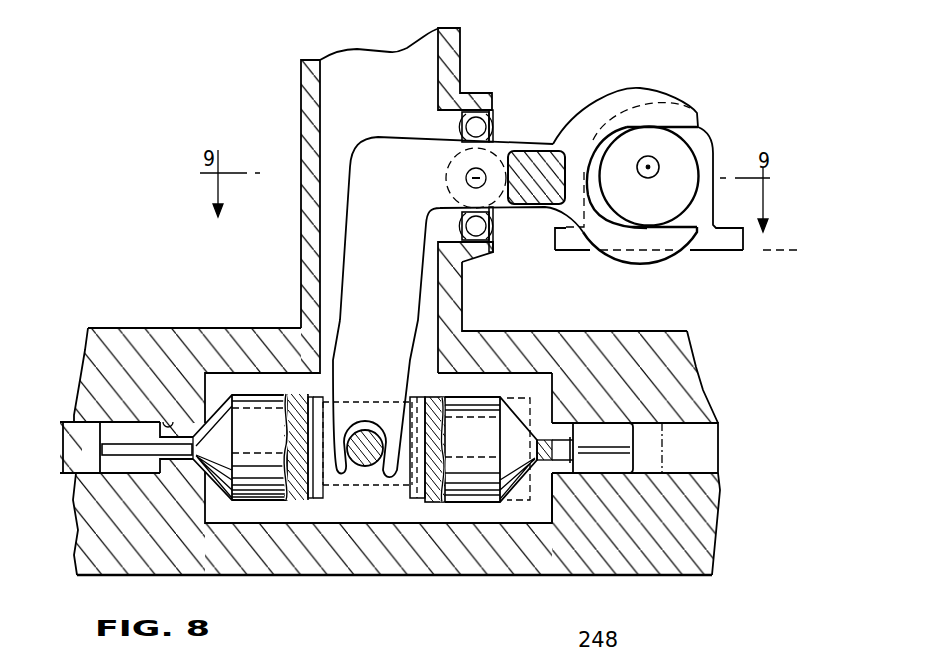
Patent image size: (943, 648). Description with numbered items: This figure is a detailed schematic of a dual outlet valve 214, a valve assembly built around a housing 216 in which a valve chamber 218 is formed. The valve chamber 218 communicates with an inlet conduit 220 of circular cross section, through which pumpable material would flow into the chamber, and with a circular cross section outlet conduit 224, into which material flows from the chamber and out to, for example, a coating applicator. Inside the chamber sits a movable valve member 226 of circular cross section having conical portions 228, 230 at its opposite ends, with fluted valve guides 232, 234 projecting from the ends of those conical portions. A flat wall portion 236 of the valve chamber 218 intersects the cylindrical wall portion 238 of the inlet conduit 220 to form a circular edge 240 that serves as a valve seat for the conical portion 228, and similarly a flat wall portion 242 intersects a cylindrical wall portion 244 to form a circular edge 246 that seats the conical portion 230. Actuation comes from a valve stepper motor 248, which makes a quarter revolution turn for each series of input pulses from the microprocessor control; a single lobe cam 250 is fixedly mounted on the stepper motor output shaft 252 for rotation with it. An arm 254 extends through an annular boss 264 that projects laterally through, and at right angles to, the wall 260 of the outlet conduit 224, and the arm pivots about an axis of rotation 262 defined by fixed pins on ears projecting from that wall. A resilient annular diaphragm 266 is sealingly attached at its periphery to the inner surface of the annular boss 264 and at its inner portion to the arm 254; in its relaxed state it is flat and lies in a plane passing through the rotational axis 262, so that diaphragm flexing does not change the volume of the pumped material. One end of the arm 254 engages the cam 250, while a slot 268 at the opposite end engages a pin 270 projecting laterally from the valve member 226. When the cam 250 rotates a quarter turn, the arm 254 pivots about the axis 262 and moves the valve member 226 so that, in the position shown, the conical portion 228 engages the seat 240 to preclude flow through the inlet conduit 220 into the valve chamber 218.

The dual outlet valve 214 is at (264, 287).
The housing 216 is at (263, 327).
The valve chamber 218 is at (302, 525).
The inlet conduit 220 is at (76, 398).
The outlet conduit 224 is at (437, 319).
The movable valve member 226 is at (262, 488).
The conical portion 228 is at (203, 473).
The conical portion 230 is at (563, 425).
The fluted valve guide 232 is at (112, 464).
The fluted valve guide 234 is at (620, 430).
The wall portion 236 is at (205, 392).
The cylindrical wall portion 238 is at (160, 420).
The circular edge 240 is at (207, 427).
The wall portion 242 is at (533, 380).
The cylindrical wall portion 244 is at (557, 430).
The circular edge 246 is at (552, 465).
The valve stepper motor 248 is at (700, 84).
The single lobe cam 250 is at (684, 170).
The stepper motor output shaft 252 is at (647, 157).
The arm 254 is at (357, 247).
The conduit wall 260 is at (452, 53).
The axis of rotation 262 is at (466, 177).
The annular boss 264 is at (463, 93).
The resilient annular diaphragm 266 is at (490, 123).
The slot 268 is at (373, 422).
The pin 270 is at (363, 478).